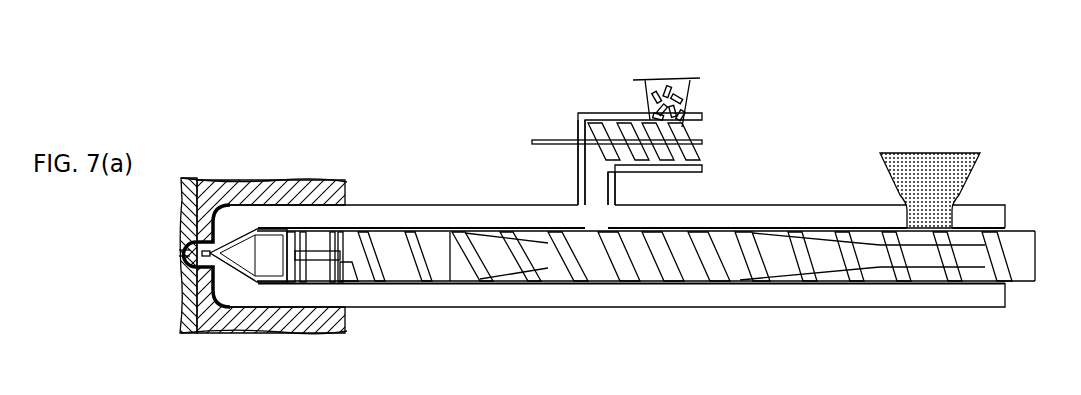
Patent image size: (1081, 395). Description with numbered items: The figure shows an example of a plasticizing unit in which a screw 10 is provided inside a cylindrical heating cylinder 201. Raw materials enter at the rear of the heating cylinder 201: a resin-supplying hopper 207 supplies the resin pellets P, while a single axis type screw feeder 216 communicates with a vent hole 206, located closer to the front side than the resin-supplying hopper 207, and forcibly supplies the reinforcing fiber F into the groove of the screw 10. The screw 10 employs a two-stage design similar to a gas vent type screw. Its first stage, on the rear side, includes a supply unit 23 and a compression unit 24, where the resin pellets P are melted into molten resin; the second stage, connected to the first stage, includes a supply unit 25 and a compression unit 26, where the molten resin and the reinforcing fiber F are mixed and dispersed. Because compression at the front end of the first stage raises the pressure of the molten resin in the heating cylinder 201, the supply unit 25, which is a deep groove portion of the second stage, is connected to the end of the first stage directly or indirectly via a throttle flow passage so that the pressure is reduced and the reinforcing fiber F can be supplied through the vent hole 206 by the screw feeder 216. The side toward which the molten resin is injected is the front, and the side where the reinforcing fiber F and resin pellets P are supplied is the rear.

The heating cylinder 201 is at (370, 205).
The screw 10 is at (618, 253).
The vent hole 206 is at (592, 217).
The single axis type screw feeder 216 is at (607, 120).
The resin-supplying hopper 207 is at (972, 170).
The supply unit 23 is at (948, 260).
The compression unit 24 is at (800, 262).
The supply unit 25 is at (603, 262).
The compression unit 26 is at (465, 270).
The reinforcing fiber F is at (682, 80).
The resin pellets P is at (927, 160).